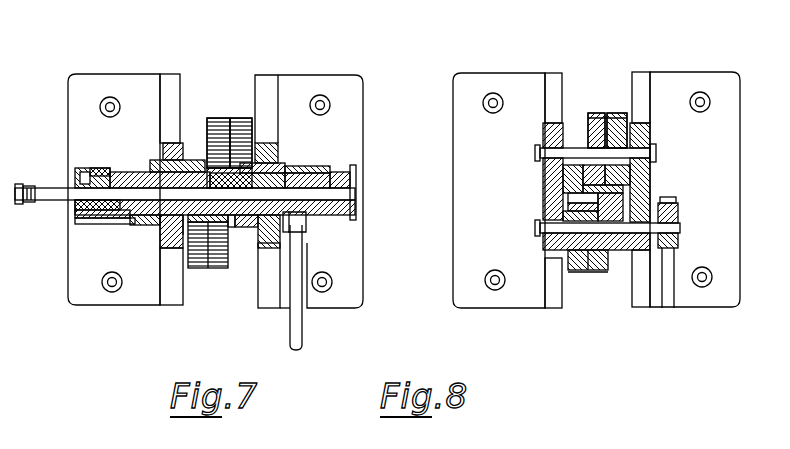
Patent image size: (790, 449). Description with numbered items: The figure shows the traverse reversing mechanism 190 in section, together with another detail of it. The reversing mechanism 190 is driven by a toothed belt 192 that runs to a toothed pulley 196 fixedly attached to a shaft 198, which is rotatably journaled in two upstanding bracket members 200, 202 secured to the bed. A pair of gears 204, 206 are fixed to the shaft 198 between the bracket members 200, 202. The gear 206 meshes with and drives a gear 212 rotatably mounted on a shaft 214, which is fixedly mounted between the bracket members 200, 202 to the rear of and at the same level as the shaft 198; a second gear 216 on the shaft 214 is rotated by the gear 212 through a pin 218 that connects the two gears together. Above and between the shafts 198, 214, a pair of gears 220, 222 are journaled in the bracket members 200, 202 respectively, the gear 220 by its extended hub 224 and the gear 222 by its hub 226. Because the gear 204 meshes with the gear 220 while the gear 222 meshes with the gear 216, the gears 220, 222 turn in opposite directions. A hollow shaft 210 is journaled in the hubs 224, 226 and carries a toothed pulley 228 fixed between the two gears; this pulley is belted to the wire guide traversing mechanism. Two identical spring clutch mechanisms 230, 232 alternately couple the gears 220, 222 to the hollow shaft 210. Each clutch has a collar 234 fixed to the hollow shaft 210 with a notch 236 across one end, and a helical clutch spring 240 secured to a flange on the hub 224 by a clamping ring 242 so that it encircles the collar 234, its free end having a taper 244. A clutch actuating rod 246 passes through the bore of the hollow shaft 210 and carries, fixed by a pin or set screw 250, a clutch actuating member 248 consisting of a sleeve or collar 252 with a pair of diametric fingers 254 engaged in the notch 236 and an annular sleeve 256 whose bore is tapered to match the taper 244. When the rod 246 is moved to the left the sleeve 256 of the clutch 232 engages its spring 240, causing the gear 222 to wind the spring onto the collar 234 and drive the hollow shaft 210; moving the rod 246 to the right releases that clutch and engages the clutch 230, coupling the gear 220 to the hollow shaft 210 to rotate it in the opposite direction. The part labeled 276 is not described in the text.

In FIG. 7, the reversing mechanism 190 is at (231, 110).
In FIG. 8, the reversing mechanism 190 is at (602, 110).
In FIG. 7, the toothed belt 192 is at (305, 342).
In FIG. 8, the toothed belt 192 is at (670, 205).
In FIG. 7, the toothed pulley 196 is at (325, 252).
In FIG. 8, the toothed pulley 196 is at (680, 214).
In FIG. 7, the shaft 198 is at (272, 240).
In FIG. 8, the shaft 198 is at (680, 232).
In FIG. 7, the bracket member 200 is at (150, 58).
In FIG. 8, the bracket member 200 is at (520, 56).
In FIG. 7, the bracket member 202 is at (335, 56).
In FIG. 8, the bracket member 202 is at (705, 56).
In FIG. 7, the gear 204 is at (196, 272).
In FIG. 8, the gear 204 is at (575, 273).
In FIG. 7, the gear 206 is at (216, 272).
In FIG. 8, the gear 206 is at (603, 273).
In FIG. 7, the hollow shaft 210 is at (330, 210).
In FIG. 7, the gear 212 is at (208, 118).
In FIG. 8, the gear 212 is at (590, 113).
In FIG. 8, the shaft 214 is at (535, 152).
In FIG. 7, the second gear 216 is at (250, 118).
In FIG. 8, the second gear 216 is at (618, 113).
In FIG. 8, the pin 218 is at (650, 180).
In FIG. 7, the gear 220 is at (163, 143).
In FIG. 7, the gear 222 is at (276, 148).
In FIG. 7, the extended hub 224 is at (158, 160).
In FIG. 7, the hub 226 is at (280, 163).
In FIG. 7, the toothed pulley 228 is at (131, 194).
In FIG. 7, the spring clutch mechanism 230 is at (145, 226).
In FIG. 7, the spring clutch mechanism 232 is at (300, 166).
In FIG. 7, the collar 234 is at (140, 178).
In FIG. 7, the notch 236 is at (135, 224).
In FIG. 7, the helical clutch spring 240 is at (140, 170).
In FIG. 7, the clamping ring 242 is at (162, 234).
In FIG. 7, the taper 244 is at (143, 173).
In FIG. 7, the clutch actuating rod 246 is at (345, 205).
In FIG. 7, the clutch actuating member 248 is at (100, 208).
In FIG. 7, the pin or set screw 250 is at (88, 168).
In FIG. 7, the sleeve or collar 252 is at (78, 176).
In FIG. 7, the diametric fingers 254 is at (110, 215).
In FIG. 7, the annular sleeve 256 is at (120, 219).
In FIG. 7, the end nut 276 is at (33, 200).